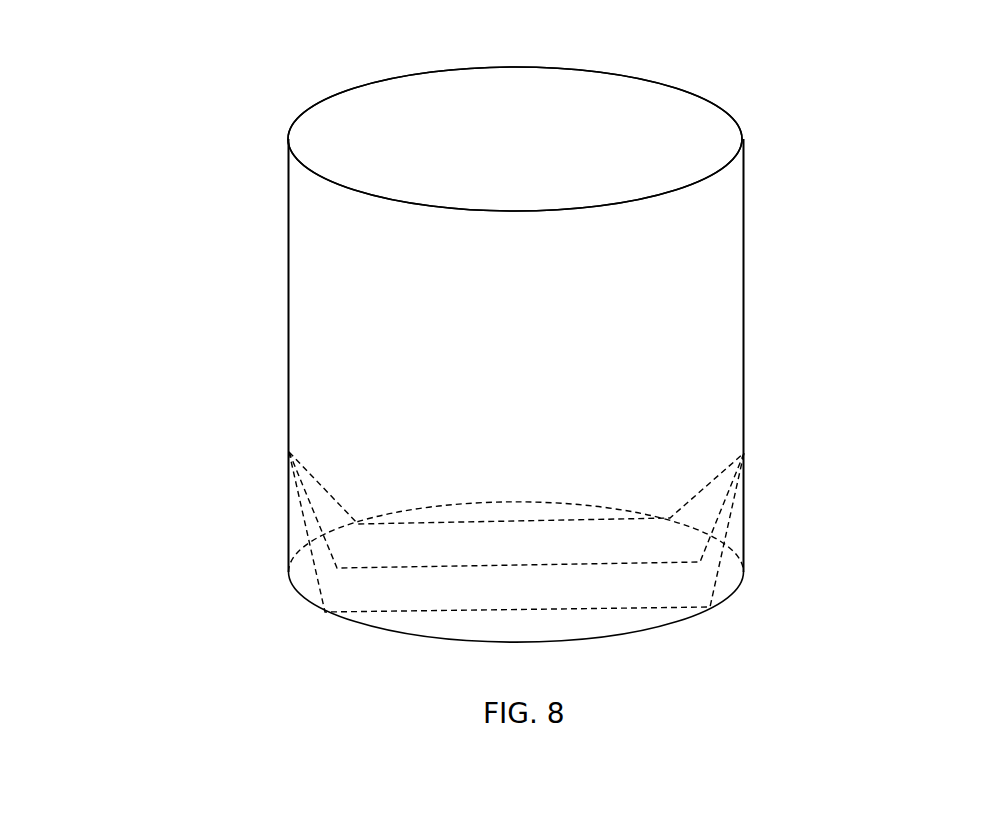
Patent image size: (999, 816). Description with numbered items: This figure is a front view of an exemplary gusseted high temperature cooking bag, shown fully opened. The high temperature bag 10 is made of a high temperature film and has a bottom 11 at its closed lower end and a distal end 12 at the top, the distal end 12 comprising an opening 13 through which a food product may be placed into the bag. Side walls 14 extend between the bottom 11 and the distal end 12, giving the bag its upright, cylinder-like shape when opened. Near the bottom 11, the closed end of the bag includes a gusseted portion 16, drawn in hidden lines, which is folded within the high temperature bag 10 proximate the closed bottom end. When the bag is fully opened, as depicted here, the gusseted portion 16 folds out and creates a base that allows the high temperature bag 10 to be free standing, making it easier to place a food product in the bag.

The high temperature bag 10 is at (190, 99).
The bottom 11 is at (643, 632).
The distal end 12 is at (738, 120).
The opening 13 is at (600, 121).
The side walls 14 is at (744, 325).
The gusseted portion 16 is at (318, 557).